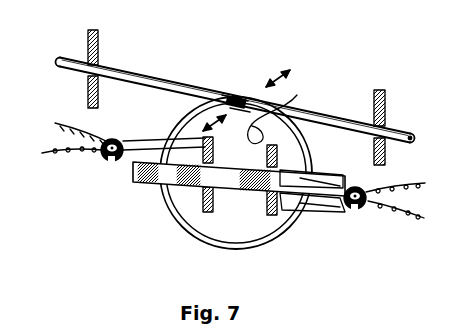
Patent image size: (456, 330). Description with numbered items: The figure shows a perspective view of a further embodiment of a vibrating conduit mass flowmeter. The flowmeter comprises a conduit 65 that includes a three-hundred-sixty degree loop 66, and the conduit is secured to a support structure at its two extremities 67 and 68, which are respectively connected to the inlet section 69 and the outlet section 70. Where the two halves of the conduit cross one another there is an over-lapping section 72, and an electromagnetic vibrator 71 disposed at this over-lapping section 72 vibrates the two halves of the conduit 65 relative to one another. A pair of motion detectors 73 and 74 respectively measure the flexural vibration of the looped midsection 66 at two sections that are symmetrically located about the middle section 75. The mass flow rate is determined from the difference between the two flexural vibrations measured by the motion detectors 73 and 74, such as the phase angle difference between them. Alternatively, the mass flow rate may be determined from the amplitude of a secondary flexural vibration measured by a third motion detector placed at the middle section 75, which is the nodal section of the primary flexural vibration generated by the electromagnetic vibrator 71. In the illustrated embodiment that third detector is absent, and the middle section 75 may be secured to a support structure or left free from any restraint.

The conduit 65 is at (176, 90).
The 360 degree loop 66 is at (296, 232).
The extremity 67 is at (100, 66).
The extremity 68 is at (366, 114).
The inlet section 69 is at (74, 59).
The outlet section 70 is at (400, 122).
The electromagnetic vibrator 71 is at (230, 95).
The over-lapping section 72 is at (297, 95).
The motion detector 73 is at (111, 163).
The motion detector 74 is at (360, 210).
The middle section 75 is at (212, 247).